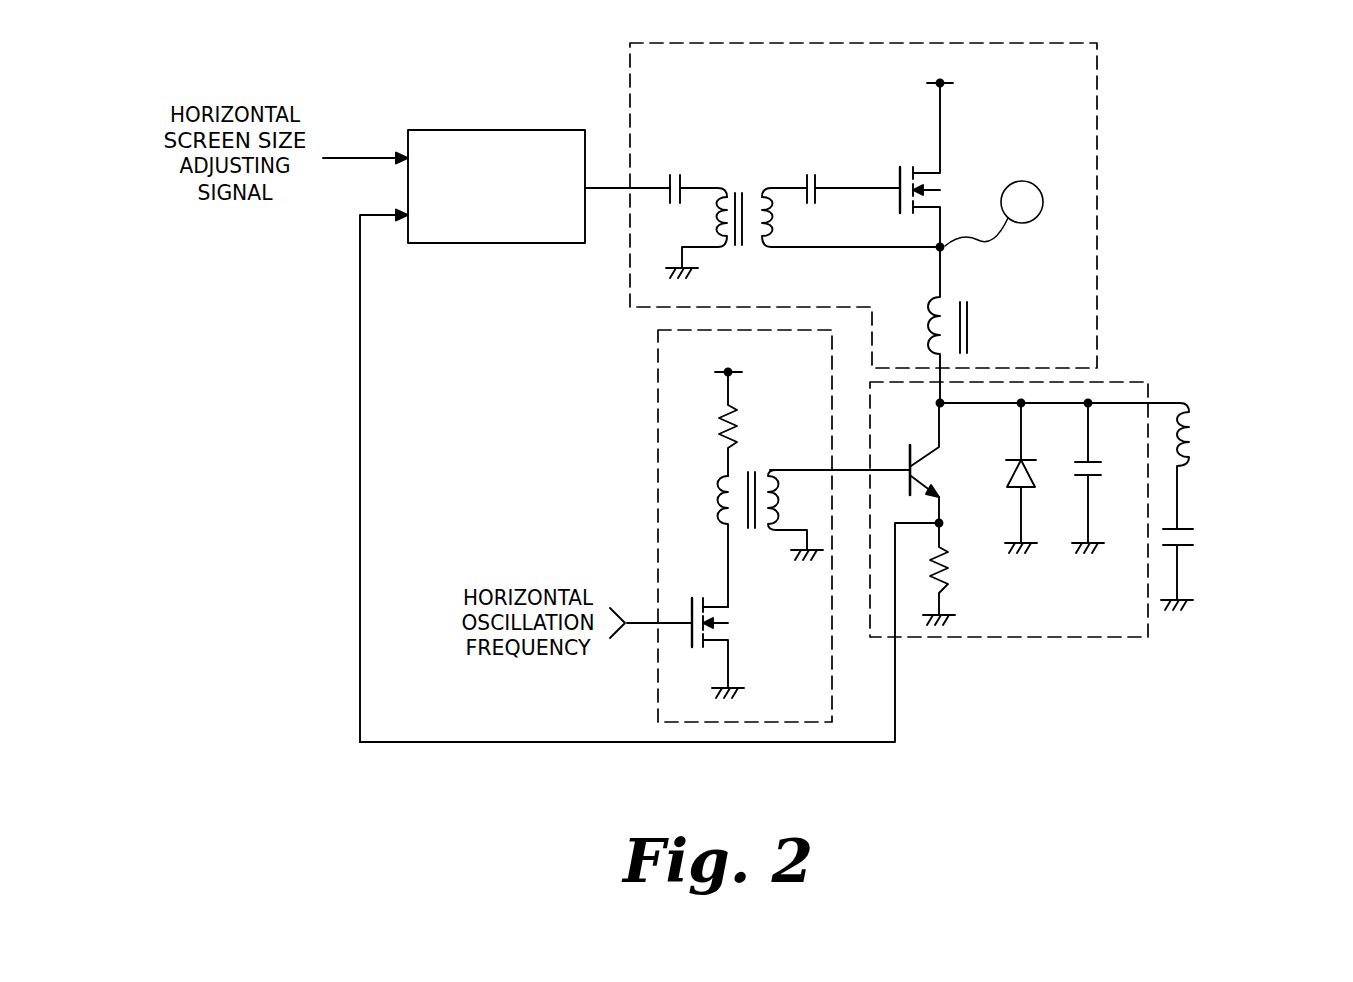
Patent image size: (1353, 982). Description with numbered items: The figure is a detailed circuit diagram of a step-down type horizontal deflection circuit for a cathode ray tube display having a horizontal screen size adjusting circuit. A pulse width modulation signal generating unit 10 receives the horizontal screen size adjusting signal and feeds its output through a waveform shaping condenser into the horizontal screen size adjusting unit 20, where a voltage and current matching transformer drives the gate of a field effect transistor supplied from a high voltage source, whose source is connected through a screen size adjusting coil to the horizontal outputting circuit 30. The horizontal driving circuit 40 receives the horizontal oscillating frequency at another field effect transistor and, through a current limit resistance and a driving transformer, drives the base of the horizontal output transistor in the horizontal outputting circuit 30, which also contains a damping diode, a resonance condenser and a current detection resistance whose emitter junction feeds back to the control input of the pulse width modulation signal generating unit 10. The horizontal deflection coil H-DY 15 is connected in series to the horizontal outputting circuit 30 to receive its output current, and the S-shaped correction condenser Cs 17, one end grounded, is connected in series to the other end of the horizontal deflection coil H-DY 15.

The pulse width modulation signal generating unit 10 is at (482, 130).
The horizontal screen size adjusting unit 20 is at (1097, 187).
The horizontal outputting circuit 30 is at (1112, 382).
The horizontal driving circuit 40 is at (657, 395).
The horizontal deflection coil H-DY 15 is at (1235, 466).
The condenser Cs 17 is at (1214, 569).